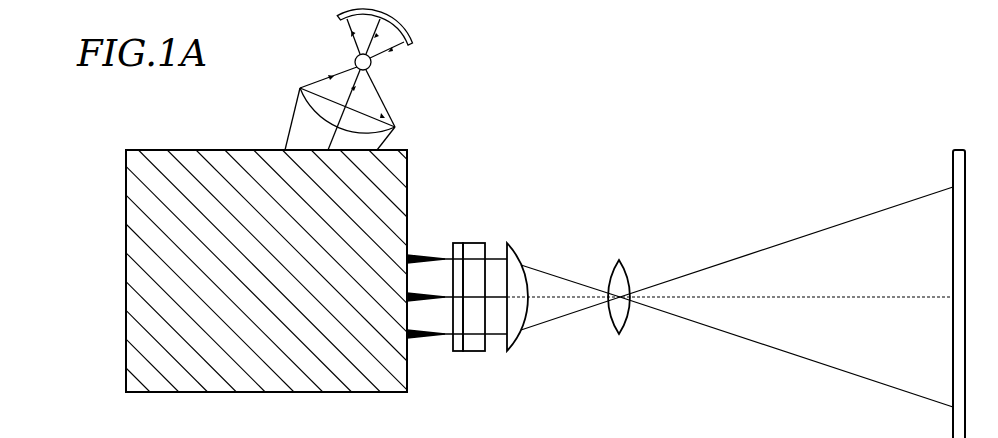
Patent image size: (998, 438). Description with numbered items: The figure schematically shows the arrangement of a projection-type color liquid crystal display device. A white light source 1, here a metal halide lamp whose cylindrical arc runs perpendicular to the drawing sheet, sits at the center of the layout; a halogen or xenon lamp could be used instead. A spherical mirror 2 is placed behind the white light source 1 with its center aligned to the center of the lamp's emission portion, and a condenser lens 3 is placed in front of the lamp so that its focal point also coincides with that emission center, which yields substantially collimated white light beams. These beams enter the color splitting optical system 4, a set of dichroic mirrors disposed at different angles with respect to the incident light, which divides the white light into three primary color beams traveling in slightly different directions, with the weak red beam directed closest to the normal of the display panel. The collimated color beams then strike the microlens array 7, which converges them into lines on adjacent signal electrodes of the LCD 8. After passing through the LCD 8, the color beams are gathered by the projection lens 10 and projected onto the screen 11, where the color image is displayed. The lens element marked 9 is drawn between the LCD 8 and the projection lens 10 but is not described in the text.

The white light source 1 is at (373, 68).
The spherical mirror 2 is at (414, 40).
The condenser lens 3 is at (299, 88).
The color splitting optical system 4 is at (125, 183).
The microlens array 7 is at (458, 243).
The LCD 8 is at (482, 243).
The collimating lens 9 is at (520, 258).
The projection lens 10 is at (618, 262).
The screen 11 is at (953, 170).